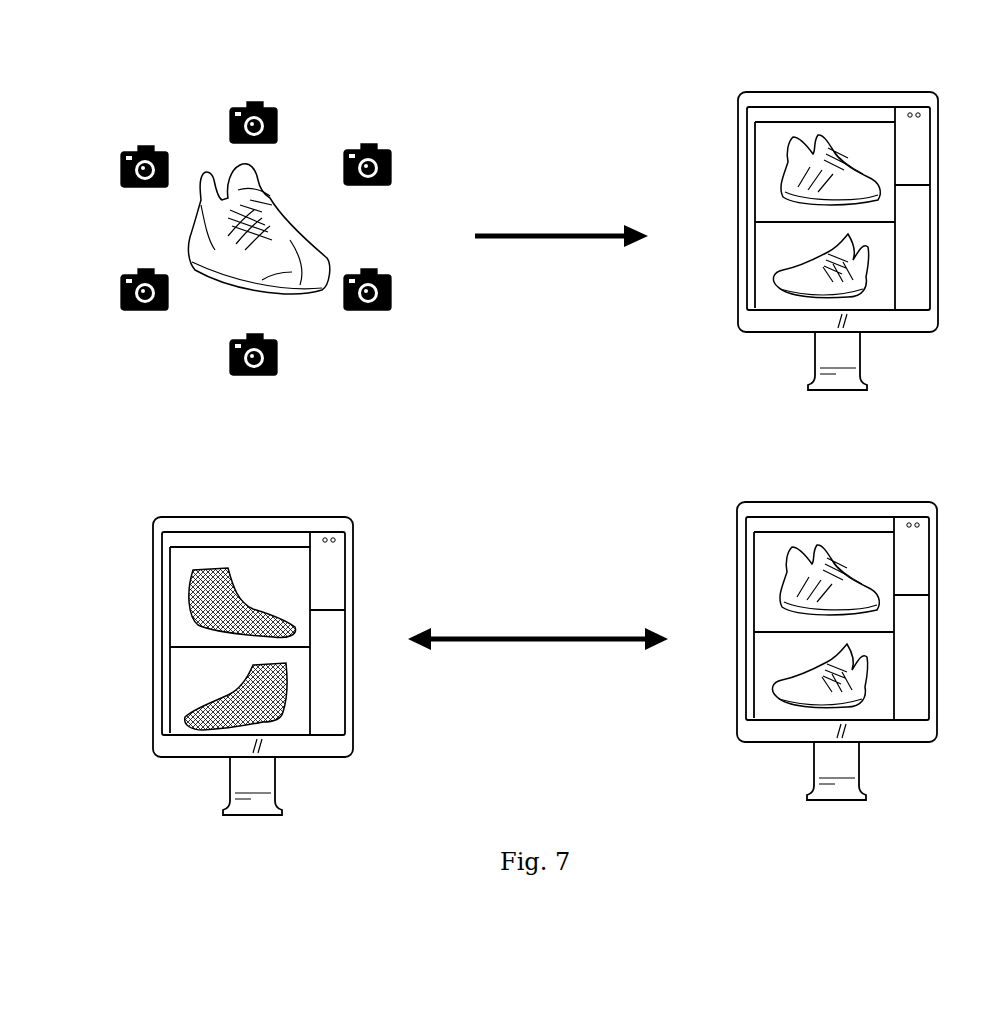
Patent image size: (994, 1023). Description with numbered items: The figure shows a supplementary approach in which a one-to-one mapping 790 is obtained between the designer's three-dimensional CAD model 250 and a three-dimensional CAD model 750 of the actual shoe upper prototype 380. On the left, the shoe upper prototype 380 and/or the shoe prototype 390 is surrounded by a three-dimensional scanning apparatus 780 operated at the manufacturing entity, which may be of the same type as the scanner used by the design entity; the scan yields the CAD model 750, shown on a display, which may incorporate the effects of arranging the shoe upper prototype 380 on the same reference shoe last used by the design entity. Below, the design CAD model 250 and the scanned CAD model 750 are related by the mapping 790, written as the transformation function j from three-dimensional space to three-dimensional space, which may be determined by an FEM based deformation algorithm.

The 3D scanning apparatus 780 is at (230, 120).
The shoe upper prototype 380 is at (280, 257).
The shoe prototype 390 is at (211, 308).
The 3D CAD model of the shoe upper prototype 750 is at (845, 183).
The 3D CAD model 250 is at (252, 695).
The one-to-one mapping 790 is at (538, 669).